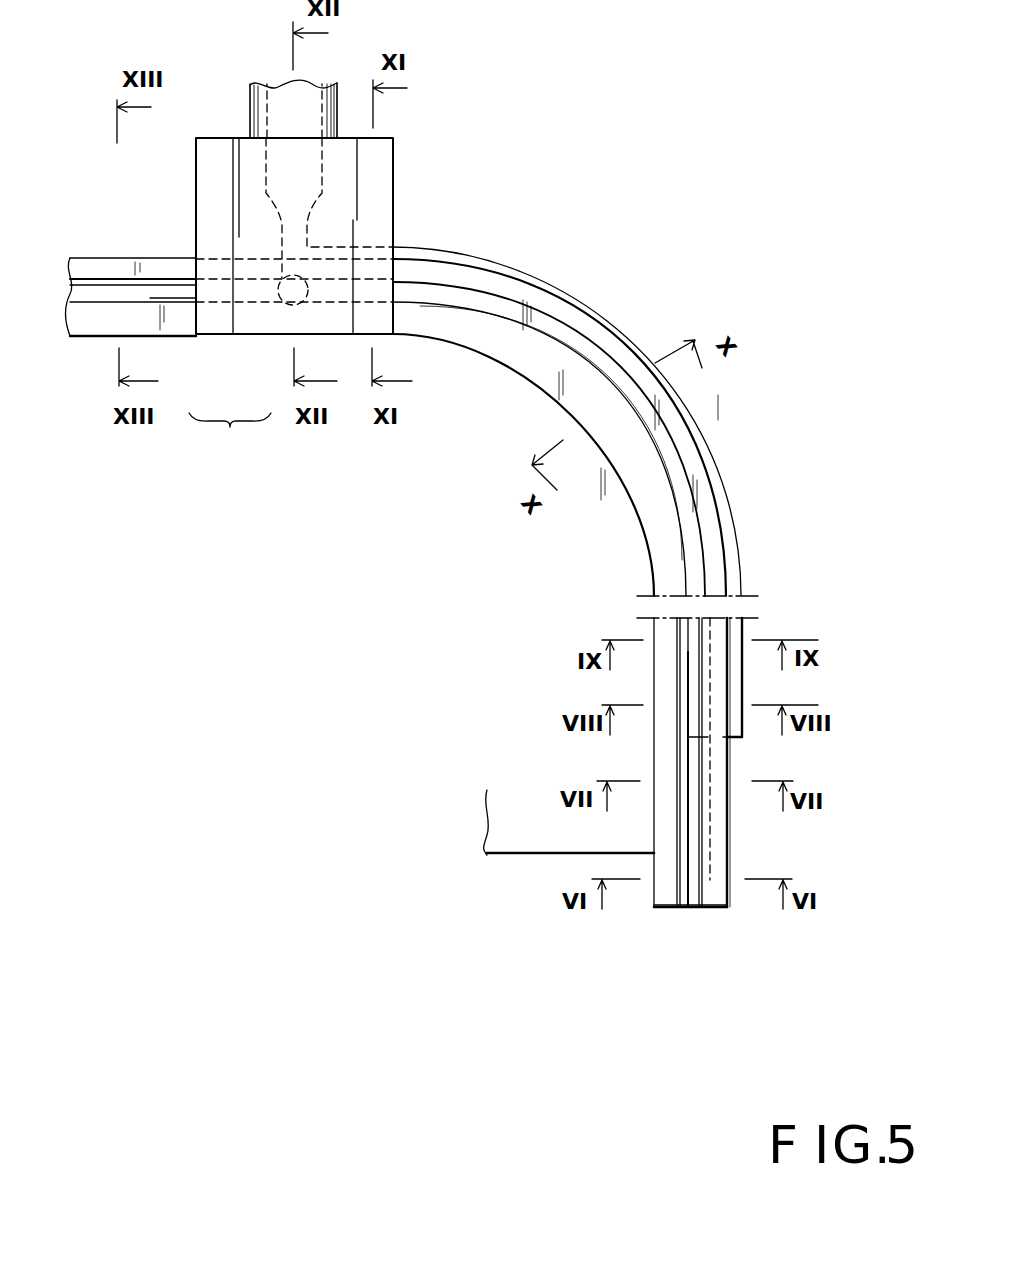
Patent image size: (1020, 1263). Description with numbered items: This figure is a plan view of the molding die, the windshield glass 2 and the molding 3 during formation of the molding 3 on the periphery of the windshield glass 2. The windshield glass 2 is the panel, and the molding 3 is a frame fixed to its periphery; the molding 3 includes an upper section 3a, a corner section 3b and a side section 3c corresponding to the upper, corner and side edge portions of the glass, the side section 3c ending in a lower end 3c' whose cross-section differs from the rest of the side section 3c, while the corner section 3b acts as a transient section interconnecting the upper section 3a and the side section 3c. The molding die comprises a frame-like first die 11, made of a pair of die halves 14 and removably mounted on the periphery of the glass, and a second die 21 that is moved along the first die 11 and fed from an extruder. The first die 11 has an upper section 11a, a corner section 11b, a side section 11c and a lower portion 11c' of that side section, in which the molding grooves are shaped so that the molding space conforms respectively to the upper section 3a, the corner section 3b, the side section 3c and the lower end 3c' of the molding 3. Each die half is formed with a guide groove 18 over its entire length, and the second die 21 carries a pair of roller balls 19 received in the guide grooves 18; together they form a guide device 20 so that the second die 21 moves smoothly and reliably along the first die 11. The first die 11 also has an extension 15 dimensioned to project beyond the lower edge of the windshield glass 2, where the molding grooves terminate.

The windshield glass 2 is at (510, 843).
The molding 3 is at (742, 522).
The upper section 3a is at (405, 252).
The corner section 3b is at (572, 312).
The side section 3c is at (760, 677).
The lower end 3c' is at (799, 746).
The first die 11 is at (118, 249).
The upper section 11a is at (174, 268).
The corner section 11b is at (603, 363).
The side section 11c is at (748, 733).
The lower portion 11c' is at (785, 766).
The die halves 14 is at (648, 525).
The extension 15 is at (659, 895).
The guide groove 18 is at (172, 297).
The roller ball 19 is at (287, 305).
The guide device 20 is at (230, 435).
The second die 21 is at (402, 162).